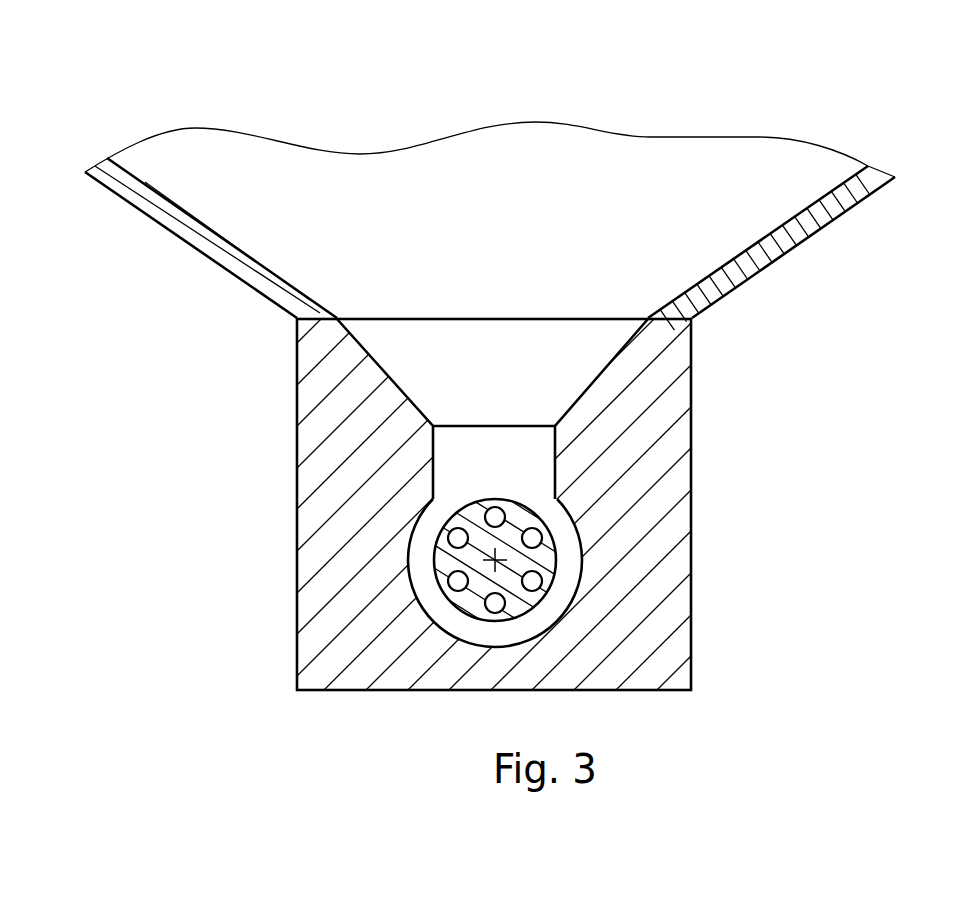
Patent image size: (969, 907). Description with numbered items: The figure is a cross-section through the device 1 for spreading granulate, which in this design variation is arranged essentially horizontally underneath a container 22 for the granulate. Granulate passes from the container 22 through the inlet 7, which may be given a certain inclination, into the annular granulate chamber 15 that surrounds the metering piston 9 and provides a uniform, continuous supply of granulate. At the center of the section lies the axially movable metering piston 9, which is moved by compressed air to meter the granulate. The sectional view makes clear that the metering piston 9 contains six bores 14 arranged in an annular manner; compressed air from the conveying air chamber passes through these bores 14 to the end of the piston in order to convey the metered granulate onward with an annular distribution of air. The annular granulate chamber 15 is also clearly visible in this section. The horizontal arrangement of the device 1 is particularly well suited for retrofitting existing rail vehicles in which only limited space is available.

The device for spreading granulate 1 is at (738, 465).
The inlet 7 is at (465, 349).
The metering piston 9 is at (518, 518).
The bores 14 is at (452, 538).
The annular granulate chamber 15 is at (475, 627).
The container 22 is at (313, 202).